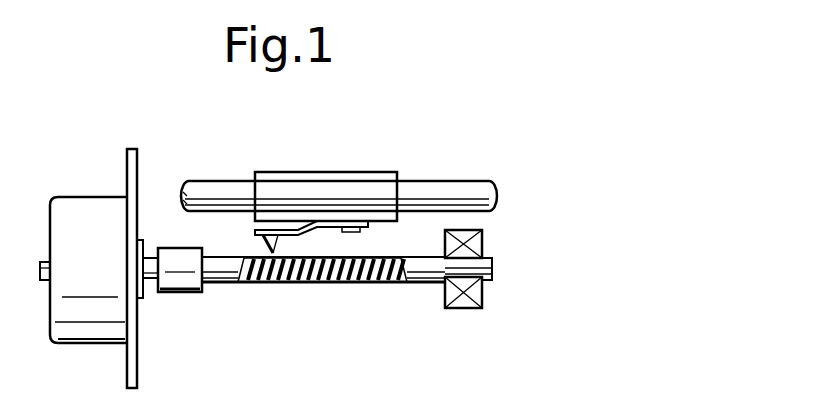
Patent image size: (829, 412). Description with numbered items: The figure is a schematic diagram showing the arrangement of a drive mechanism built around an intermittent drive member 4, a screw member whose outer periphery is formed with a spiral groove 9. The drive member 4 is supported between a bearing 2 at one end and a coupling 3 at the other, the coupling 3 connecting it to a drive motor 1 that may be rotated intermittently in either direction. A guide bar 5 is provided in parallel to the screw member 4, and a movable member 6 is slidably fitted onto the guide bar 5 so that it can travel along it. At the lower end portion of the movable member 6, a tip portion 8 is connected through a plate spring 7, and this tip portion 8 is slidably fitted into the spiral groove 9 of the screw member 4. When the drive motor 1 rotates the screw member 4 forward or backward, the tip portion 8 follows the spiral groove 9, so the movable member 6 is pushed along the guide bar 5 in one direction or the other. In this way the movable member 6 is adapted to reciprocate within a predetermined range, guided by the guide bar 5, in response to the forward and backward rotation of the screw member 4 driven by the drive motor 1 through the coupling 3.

The drive motor 1 is at (63, 344).
The bearing 2 is at (460, 309).
The coupling 3 is at (186, 293).
The intermittent drive member 4 is at (224, 283).
The guide bar 5 is at (443, 182).
The movable member 6 is at (322, 173).
The plate spring 7 is at (322, 229).
The tip portion 8 is at (262, 247).
The spiral groove 9 is at (316, 283).